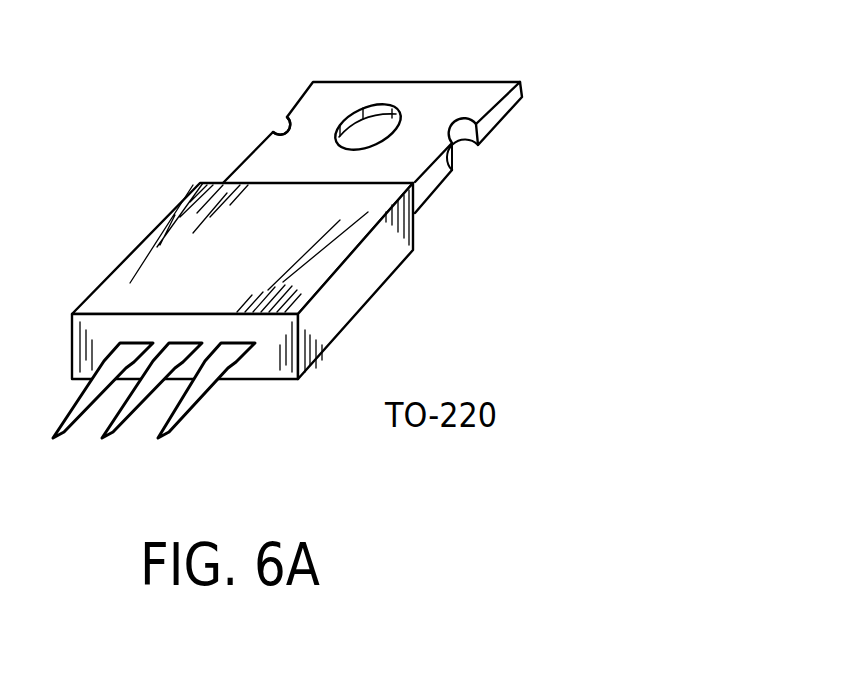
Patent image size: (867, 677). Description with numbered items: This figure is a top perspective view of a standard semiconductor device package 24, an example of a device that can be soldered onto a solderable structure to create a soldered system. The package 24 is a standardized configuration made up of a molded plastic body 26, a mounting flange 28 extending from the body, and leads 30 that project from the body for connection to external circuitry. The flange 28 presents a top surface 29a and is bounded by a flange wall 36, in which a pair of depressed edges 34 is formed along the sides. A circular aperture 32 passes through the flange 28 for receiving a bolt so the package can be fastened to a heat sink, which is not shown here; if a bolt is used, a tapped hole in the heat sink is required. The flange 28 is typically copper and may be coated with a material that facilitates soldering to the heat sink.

The TO-220 semiconductor device package 24 is at (308, 261).
The molded plastic body 26 is at (378, 277).
The mounting flange 28 is at (405, 112).
The top surface 29a is at (433, 92).
The leads 30 is at (53, 440).
The circular aperture 32 is at (372, 103).
The depressed edges 34 is at (282, 123).
The flange wall 36 is at (513, 100).